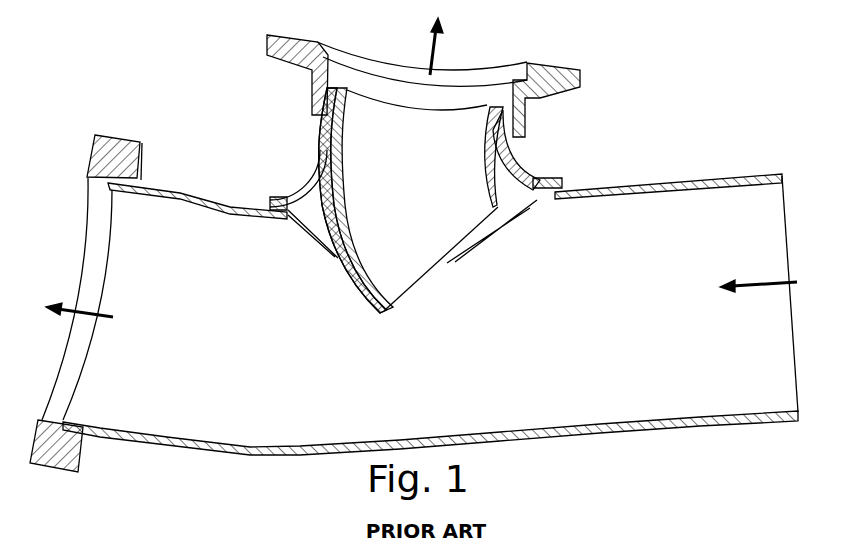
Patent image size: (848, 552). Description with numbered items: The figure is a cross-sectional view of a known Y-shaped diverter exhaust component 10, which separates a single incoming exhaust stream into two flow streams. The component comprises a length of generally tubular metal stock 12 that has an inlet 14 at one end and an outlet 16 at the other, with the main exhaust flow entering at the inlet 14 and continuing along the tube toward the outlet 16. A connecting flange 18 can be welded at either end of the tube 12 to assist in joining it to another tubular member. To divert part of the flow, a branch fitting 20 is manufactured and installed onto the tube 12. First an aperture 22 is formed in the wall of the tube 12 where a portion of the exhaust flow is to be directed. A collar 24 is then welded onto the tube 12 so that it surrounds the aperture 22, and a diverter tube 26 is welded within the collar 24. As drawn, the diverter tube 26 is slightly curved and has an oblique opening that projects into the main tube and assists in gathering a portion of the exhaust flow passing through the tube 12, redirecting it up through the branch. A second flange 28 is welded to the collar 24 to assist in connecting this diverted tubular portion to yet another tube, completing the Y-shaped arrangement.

The exhaust component 10 is at (424, 245).
The tubular metal stock 12 is at (748, 177).
The inlet 14 is at (790, 213).
The outlet 16 is at (84, 218).
The connecting flange 18 is at (124, 135).
The branch fitting 20 is at (428, 174).
The aperture 22 is at (545, 177).
The collar 24 is at (305, 188).
The diverter tube 26 is at (322, 143).
The second flange 28 is at (555, 68).